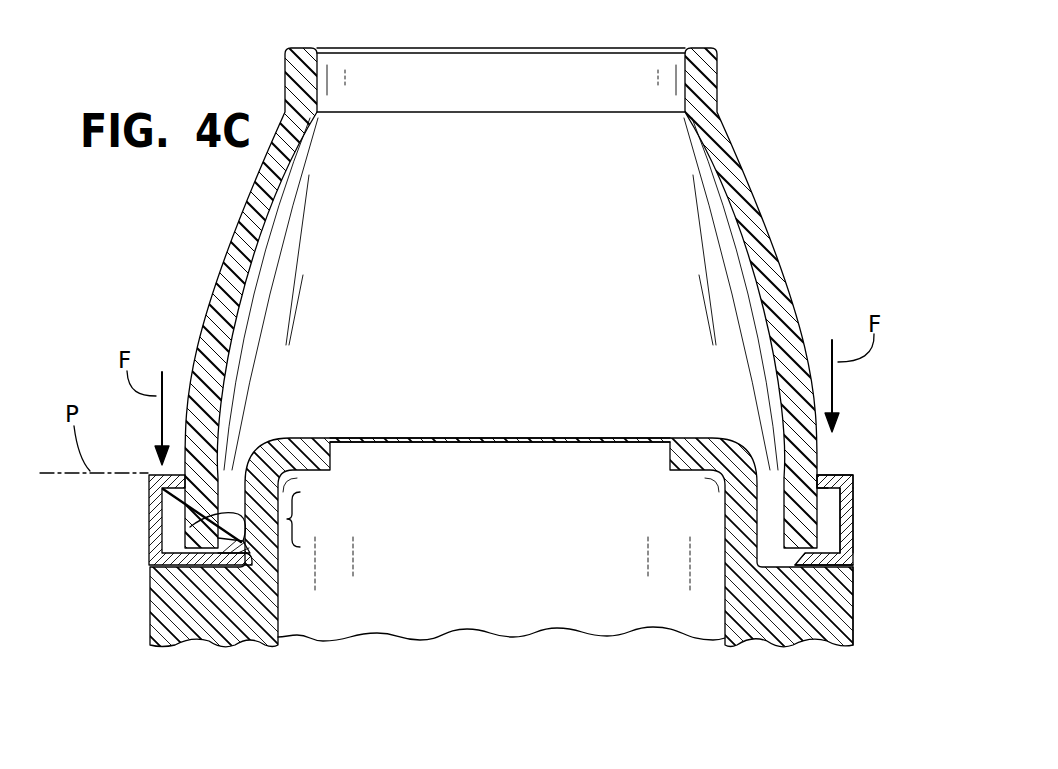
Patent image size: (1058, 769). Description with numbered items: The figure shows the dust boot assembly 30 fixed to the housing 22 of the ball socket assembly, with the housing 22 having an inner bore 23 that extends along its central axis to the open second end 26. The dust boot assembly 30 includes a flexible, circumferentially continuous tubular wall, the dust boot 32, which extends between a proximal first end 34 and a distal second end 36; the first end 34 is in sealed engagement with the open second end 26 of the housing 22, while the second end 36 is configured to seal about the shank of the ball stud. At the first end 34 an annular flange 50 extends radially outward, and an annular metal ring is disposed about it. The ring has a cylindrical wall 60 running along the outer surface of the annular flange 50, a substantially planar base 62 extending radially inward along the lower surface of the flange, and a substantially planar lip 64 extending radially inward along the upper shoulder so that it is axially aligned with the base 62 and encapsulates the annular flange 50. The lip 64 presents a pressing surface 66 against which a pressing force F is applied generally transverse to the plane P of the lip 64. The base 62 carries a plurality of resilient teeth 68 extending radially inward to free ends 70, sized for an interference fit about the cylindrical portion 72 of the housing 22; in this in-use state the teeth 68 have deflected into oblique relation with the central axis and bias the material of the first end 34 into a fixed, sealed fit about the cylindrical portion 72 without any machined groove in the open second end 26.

The housing 22 is at (168, 603).
The inner bore 23 is at (516, 567).
The open second end 26 is at (455, 438).
The dust boot assembly 30 is at (572, 277).
The dust boot 32 is at (752, 193).
The first end 34 is at (855, 607).
The second end 36 is at (686, 48).
The annular flange 50 is at (855, 533).
The cylindrical wall 60 is at (855, 498).
The base 62 is at (855, 583).
The lip 64 is at (848, 476).
The pressing surface 66 is at (828, 462).
The teeth 68 is at (279, 592).
The free ends 70 is at (190, 527).
The cylindrical portion 72 is at (309, 519).